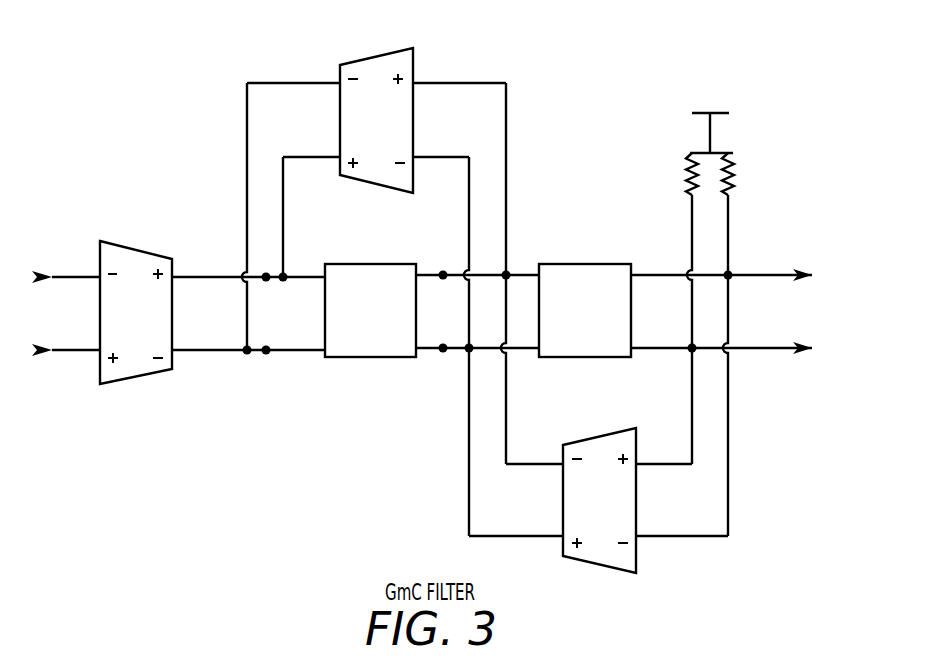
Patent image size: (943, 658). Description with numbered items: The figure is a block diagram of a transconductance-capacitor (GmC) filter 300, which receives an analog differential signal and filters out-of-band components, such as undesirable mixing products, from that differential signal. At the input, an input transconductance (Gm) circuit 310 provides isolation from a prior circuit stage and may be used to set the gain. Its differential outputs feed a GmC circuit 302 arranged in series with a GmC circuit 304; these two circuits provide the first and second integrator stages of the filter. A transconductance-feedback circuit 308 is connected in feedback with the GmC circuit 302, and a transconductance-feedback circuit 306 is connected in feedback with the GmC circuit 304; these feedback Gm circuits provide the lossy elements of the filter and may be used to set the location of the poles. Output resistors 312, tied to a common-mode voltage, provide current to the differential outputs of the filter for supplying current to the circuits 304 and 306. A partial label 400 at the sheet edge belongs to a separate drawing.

The GmC filter 300 is at (803, 66).
The GmC circuit 302 is at (398, 264).
The GmC circuit 304 is at (614, 264).
The transconductance-feedback circuit 306 is at (601, 437).
The transconductance-feedback circuit 308 is at (377, 54).
The input transconductance (Gm) circuit 310 is at (139, 243).
The output resistors 312 is at (733, 153).
The filter circuit of next figure 400 is at (808, 656).